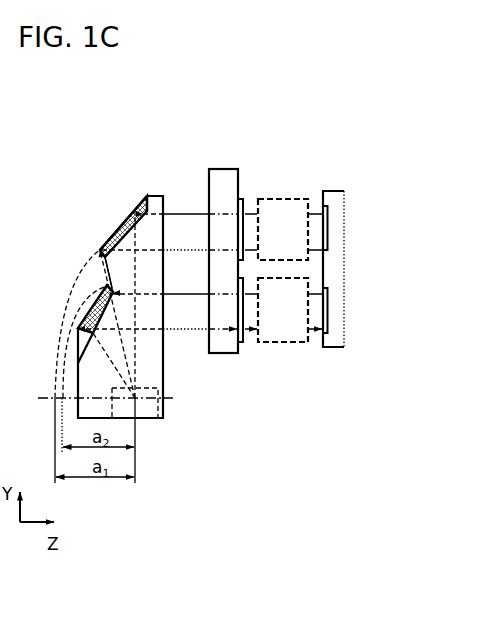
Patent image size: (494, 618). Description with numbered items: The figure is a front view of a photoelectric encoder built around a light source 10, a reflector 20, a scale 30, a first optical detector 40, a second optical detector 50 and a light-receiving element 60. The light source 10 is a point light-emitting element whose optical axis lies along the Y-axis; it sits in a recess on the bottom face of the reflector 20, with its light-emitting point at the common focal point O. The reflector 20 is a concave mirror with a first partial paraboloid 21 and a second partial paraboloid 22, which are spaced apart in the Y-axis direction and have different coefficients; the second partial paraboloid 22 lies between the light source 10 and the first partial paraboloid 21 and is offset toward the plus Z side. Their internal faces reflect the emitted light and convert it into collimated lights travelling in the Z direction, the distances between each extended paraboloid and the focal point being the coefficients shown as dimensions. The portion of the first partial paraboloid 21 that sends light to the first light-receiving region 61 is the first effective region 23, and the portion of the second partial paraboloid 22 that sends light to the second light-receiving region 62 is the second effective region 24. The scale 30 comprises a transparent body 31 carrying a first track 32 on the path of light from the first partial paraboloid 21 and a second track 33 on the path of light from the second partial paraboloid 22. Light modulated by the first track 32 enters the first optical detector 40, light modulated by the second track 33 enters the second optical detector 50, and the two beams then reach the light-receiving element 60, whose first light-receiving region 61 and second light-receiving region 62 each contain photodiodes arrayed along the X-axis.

The light source 10 is at (145, 408).
The reflector 20 is at (57, 156).
The first partial paraboloid 21 is at (142, 196).
The second partial paraboloid 22 is at (96, 261).
The first effective region 23 is at (123, 223).
The second effective region 24 is at (92, 309).
The scale 30 is at (214, 256).
The transparent body 31 is at (223, 355).
The first track 32 is at (241, 198).
The second track 33 is at (240, 343).
The first optical detector 40 is at (283, 198).
The second optical detector 50 is at (280, 343).
The light-receiving element 60 is at (366, 269).
The first light-receiving region 61 is at (329, 220).
The second light-receiving region 62 is at (329, 305).